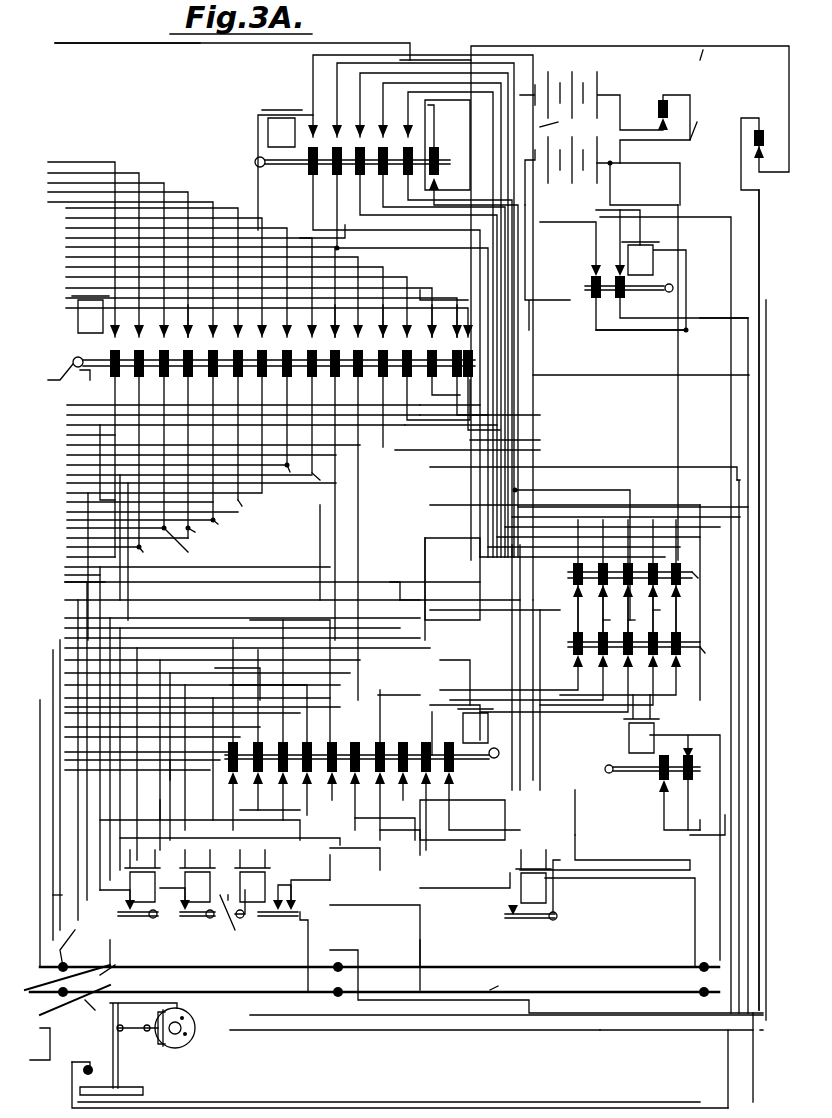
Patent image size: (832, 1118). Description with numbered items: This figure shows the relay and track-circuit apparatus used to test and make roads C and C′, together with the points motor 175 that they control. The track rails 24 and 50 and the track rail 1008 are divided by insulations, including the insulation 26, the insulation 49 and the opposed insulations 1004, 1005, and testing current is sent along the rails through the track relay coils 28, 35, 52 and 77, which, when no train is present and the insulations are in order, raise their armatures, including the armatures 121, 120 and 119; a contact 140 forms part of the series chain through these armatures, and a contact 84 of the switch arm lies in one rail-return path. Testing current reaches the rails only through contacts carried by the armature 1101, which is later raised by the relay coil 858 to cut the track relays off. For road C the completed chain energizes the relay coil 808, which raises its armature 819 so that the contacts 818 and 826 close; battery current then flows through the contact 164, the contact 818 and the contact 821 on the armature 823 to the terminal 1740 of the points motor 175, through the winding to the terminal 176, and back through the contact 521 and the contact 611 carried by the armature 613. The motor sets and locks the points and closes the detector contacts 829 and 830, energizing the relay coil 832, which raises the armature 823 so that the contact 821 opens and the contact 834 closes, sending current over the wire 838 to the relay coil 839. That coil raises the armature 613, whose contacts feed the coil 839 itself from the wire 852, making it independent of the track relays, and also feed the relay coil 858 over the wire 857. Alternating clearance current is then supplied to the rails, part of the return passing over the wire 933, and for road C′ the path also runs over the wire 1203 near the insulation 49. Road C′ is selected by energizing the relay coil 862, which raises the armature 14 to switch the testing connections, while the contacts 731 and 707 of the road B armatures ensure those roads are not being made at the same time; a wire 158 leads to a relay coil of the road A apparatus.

The armature 14 is at (274, 352).
The track rails 24 is at (379, 974).
The track rails 50 is at (374, 981).
The wire 158 is at (600, 80).
The points motor 175 is at (175, 1036).
The terminal 176 is at (188, 1035).
The terminal 1740 is at (185, 1020).
The track relay coil 77 is at (142, 876).
The track relay coil 52 is at (197, 876).
The track relay coil 28 is at (252, 876).
The track relay coil 35 is at (533, 876).
The relay coil 839 is at (281, 132).
The relay coil 862 is at (90, 314).
The relay coil 808 is at (654, 286).
The wire 852 is at (591, 478).
The relay coil 858 is at (475, 726).
The relay coil 832 is at (641, 724).
The armature 613 is at (352, 172).
The armature 1101 is at (362, 761).
The armature 819 is at (667, 293).
The armature 823 is at (640, 761).
The contact 164 is at (668, 100).
The contact 521 is at (763, 125).
The contact 611 is at (440, 158).
The contact 826 is at (627, 304).
The contact 818 is at (666, 644).
The contact 821 is at (658, 780).
The contact 834 is at (697, 792).
The contact 731 is at (617, 573).
The contact 707 is at (682, 637).
The armature 119 is at (138, 922).
The armature 120 is at (203, 922).
The armature 121 is at (278, 910).
The contact 140 is at (505, 912).
The insulation 26 is at (344, 967).
The insulation 49 is at (344, 992).
The insulation 1004 is at (700, 990).
The insulation 1005 is at (704, 962).
The contact 84 is at (64, 976).
The track rail 1008 is at (62, 1000).
The detector contact 829 is at (78, 1082).
The detector contact 830 is at (84, 1060).
The wire 933 is at (200, 43).
The wire 857 is at (443, 60).
The wire 838 is at (520, 60).
The wire 1203 is at (460, 1042).